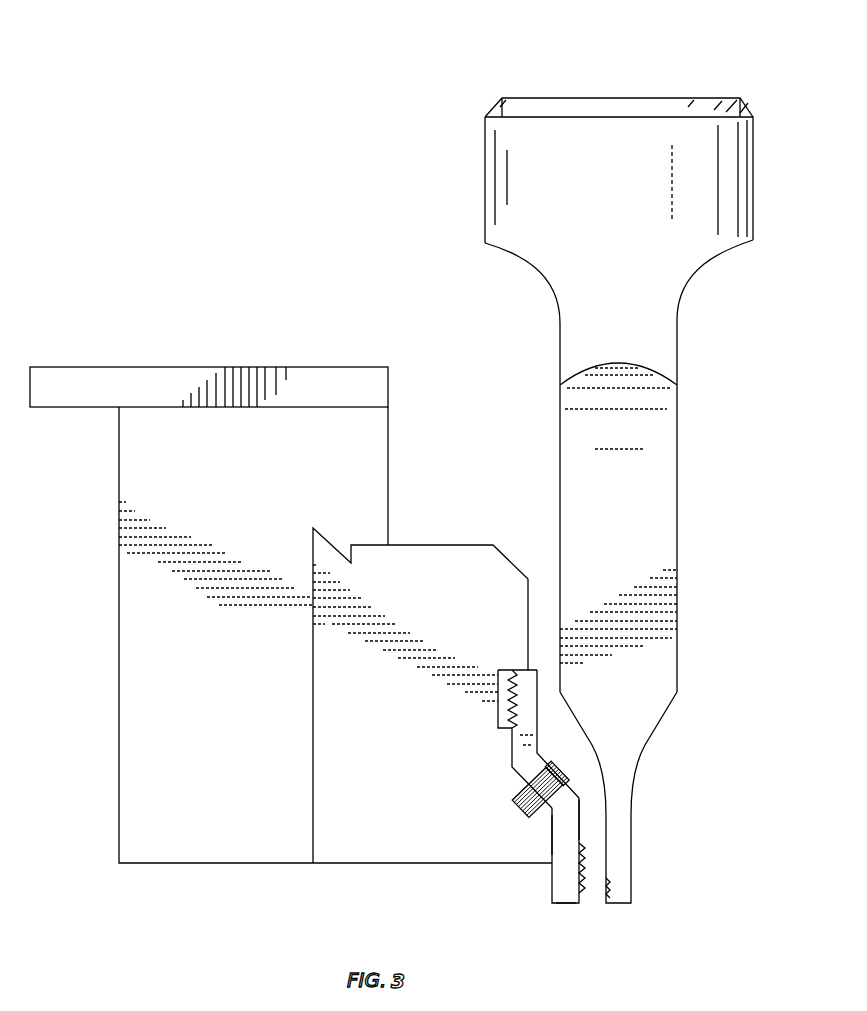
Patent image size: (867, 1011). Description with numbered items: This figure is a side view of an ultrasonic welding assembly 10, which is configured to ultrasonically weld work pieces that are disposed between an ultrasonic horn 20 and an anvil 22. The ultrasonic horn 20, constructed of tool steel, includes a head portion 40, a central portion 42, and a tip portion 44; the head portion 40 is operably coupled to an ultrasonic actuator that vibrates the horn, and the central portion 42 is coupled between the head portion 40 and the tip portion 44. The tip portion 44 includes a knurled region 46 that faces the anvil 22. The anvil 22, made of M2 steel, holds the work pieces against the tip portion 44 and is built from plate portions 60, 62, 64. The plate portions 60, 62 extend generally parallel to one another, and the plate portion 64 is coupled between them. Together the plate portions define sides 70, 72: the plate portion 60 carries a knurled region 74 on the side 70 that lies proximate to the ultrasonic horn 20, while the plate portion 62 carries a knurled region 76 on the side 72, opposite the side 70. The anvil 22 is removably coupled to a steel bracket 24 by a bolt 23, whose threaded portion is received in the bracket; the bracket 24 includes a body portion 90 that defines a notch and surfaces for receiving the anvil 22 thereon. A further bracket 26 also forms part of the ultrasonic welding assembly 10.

The ultrasonic welding assembly 10 is at (781, 99).
The ultrasonic horn 20 is at (682, 542).
The anvil 22 is at (570, 912).
The bolt 23 is at (548, 757).
The bracket 24 is at (414, 852).
The bracket 26 is at (238, 846).
The head portion 40 is at (755, 200).
The central portion 42 is at (678, 467).
The tip portion 44 is at (632, 793).
The knurled region 46 is at (605, 896).
The plate portion 60 is at (552, 875).
The plate portion 62 is at (513, 733).
The plate portion 64 is at (522, 775).
The side 70 is at (581, 826).
The side 72 is at (552, 825).
The knurled region 74 is at (583, 893).
The knurled region 76 is at (512, 670).
The body portion 90 is at (427, 585).